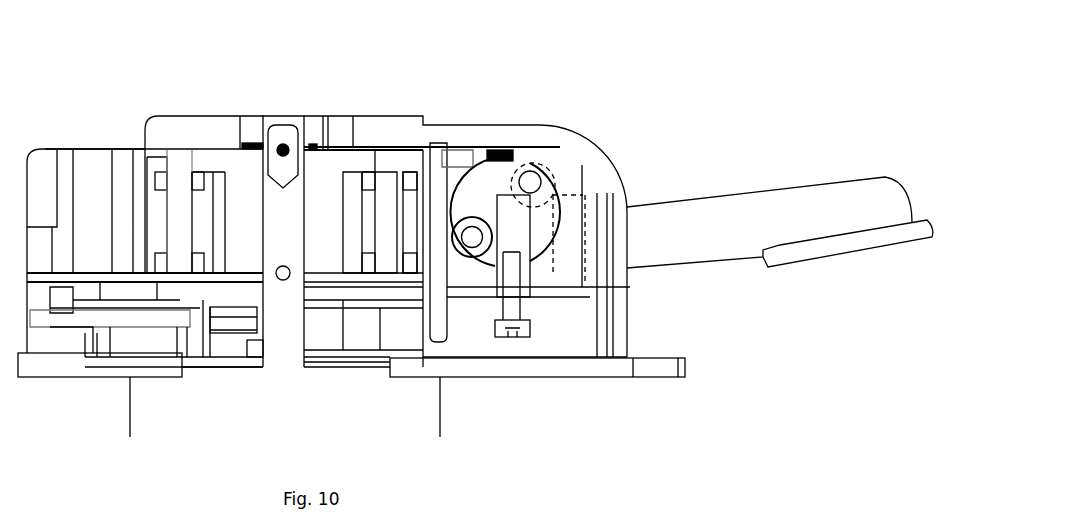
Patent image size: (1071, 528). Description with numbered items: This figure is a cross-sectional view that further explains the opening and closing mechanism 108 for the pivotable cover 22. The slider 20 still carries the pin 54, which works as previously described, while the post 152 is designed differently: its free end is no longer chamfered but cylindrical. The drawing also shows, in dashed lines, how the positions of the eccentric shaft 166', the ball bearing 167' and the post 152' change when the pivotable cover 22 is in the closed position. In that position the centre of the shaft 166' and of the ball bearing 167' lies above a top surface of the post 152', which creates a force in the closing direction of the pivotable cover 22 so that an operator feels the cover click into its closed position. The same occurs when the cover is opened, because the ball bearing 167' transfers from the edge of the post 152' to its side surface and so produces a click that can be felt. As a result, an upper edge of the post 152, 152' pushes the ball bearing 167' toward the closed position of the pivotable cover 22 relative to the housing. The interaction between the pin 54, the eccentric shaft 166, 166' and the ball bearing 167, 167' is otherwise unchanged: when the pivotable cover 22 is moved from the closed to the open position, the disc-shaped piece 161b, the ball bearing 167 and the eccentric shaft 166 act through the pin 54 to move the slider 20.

The slider 20 is at (458, 323).
The pivotable cover 22 is at (883, 213).
The pin 54 is at (437, 183).
The opening and closing mechanism 108 is at (548, 163).
The post 152 is at (651, 298).
The post 152' is at (643, 211).
The disc-shaped piece 161b is at (480, 213).
The eccentric shaft 166 is at (412, 324).
The eccentric shaft 166' is at (609, 146).
The ball bearing 167 is at (436, 134).
The ball bearing 167' is at (526, 145).